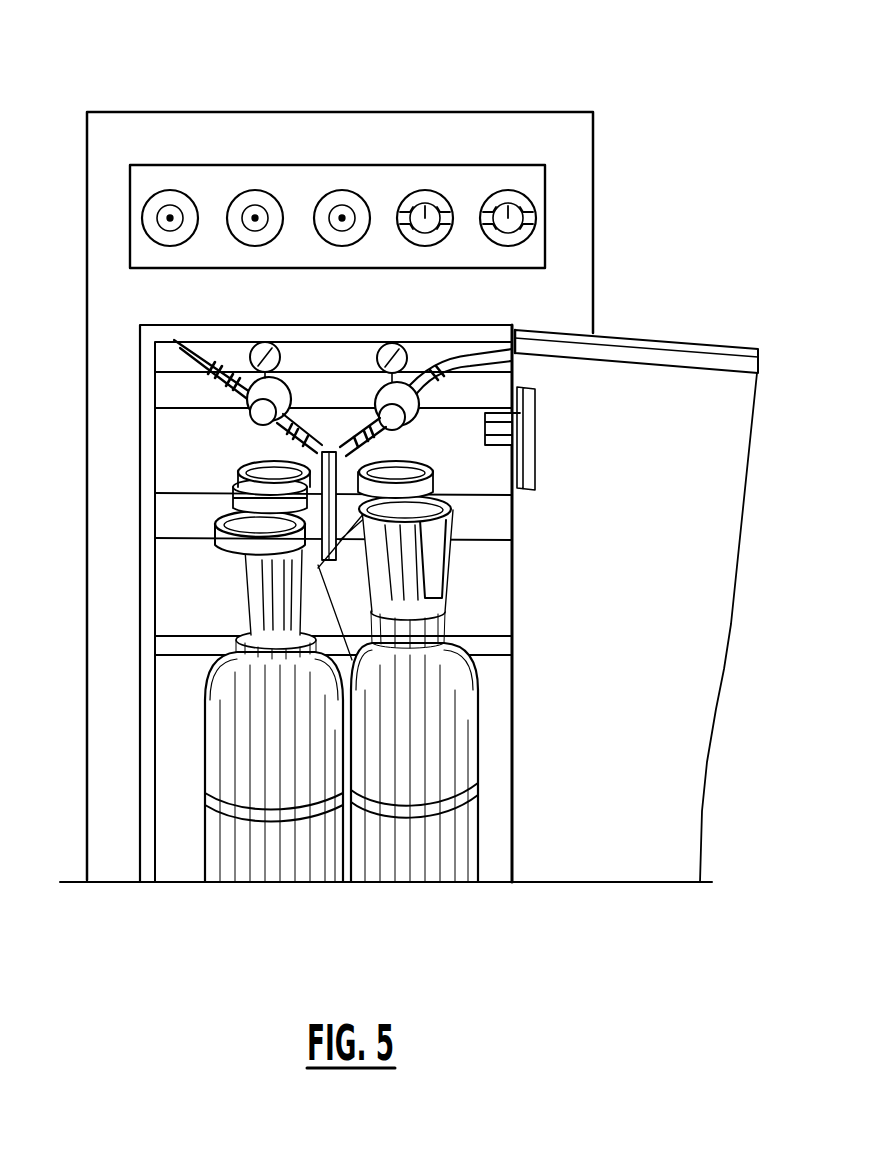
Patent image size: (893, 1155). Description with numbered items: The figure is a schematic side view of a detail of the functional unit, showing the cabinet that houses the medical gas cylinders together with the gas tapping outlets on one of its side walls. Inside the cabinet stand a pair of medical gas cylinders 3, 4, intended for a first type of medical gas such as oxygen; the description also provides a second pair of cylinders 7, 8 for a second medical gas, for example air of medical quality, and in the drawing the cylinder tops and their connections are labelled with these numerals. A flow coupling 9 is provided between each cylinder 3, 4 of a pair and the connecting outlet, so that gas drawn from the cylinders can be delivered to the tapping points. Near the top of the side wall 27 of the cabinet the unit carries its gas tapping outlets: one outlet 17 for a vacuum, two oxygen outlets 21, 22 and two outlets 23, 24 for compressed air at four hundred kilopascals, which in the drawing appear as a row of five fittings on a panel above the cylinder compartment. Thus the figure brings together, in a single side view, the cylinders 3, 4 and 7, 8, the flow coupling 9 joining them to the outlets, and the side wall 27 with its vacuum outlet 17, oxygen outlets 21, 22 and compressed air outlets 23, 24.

The medical gas cylinder 3 is at (195, 706).
The medical gas cylinder 4 is at (428, 760).
The cylinder 7 is at (233, 500).
The cylinder 8 is at (418, 352).
The flow coupling 9 is at (190, 362).
The vacuum outlet 17 is at (293, 159).
The oxygen outlet 21 is at (255, 205).
The oxygen outlet 22 is at (342, 207).
The compressed air outlet 23 is at (424, 215).
The compressed air outlet 24 is at (509, 215).
The side wall 27 is at (150, 297).